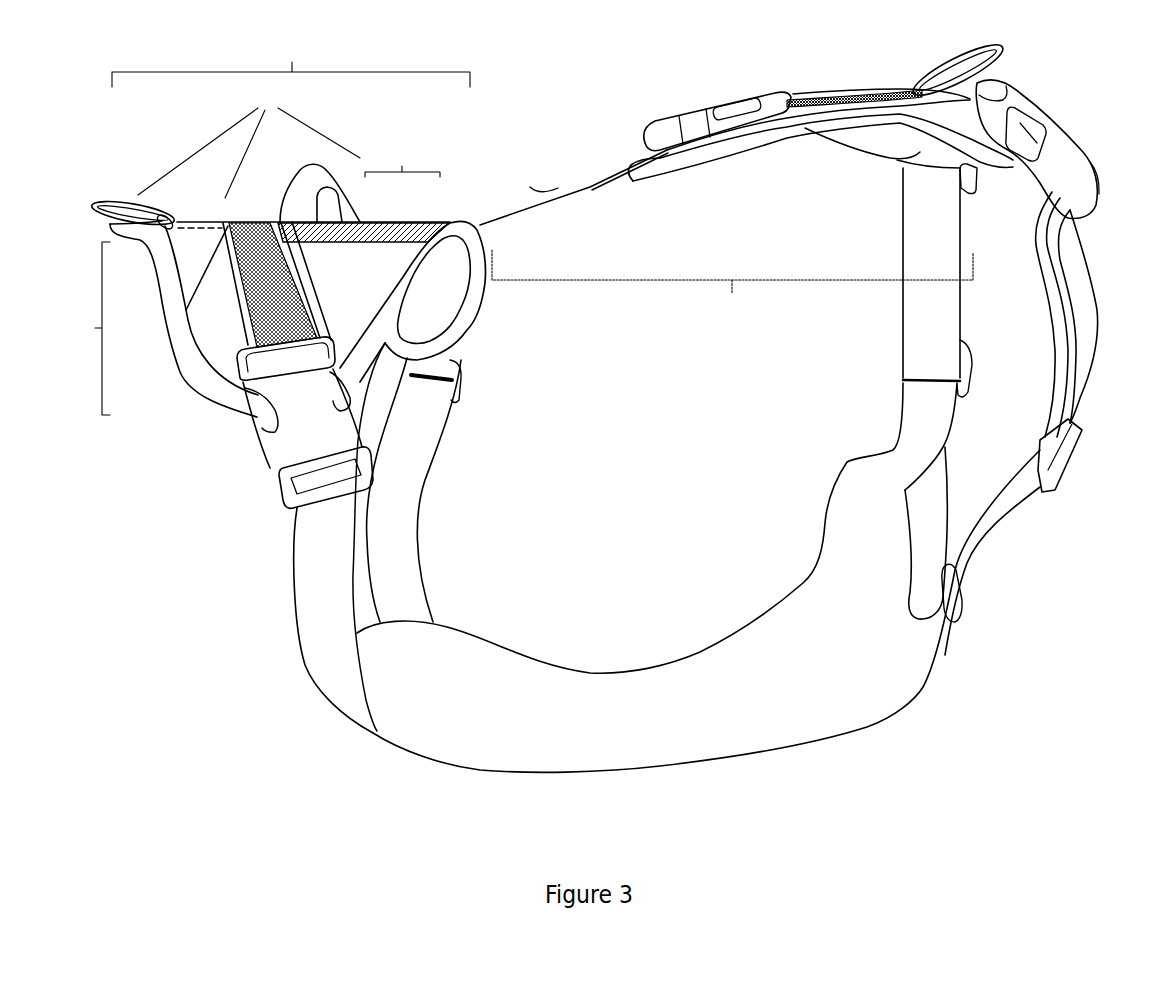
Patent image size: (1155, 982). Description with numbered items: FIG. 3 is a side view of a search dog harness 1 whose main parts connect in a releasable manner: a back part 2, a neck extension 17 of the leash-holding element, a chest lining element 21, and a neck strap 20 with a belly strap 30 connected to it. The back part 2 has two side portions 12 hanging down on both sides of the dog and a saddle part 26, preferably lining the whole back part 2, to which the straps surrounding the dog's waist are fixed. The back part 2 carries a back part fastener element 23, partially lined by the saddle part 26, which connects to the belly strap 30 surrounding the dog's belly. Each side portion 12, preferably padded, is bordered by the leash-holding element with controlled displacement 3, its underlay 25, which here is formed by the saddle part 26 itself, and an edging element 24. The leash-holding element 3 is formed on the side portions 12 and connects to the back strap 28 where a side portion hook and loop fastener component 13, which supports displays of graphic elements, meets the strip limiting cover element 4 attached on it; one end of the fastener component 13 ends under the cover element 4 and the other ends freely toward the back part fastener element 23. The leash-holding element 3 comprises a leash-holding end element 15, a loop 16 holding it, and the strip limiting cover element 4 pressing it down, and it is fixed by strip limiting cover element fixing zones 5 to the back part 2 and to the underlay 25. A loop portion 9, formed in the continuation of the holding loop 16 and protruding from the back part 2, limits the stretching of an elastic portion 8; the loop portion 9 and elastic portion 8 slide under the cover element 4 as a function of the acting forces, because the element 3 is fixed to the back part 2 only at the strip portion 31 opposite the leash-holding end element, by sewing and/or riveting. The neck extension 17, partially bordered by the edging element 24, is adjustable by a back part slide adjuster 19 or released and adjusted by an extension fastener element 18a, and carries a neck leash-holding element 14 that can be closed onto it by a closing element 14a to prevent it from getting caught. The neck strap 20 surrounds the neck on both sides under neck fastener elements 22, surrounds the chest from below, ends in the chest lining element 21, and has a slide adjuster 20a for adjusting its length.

The search dog harness 1 is at (625, 102).
The back part 2 is at (291, 63).
The leash-holding element with controlled displacement 3 is at (249, 146).
The strip limiting cover element 4 is at (188, 262).
The strip limiting cover element fixing zones 5 is at (142, 237).
The elastic portion 8 is at (343, 243).
The loop portion 9 is at (348, 206).
The side portion 12 is at (93, 328).
The side portion hook and loop fastener component 13 is at (253, 307).
The neck leash-holding element 14 is at (993, 50).
The closing element 14a is at (890, 95).
The leash-holding end element 15 is at (100, 203).
The loop holding the leash-holding end element 16 is at (170, 230).
The neck extension of the leash-holding element 17 is at (732, 281).
The extension fastener element 18a is at (727, 113).
The back part slide adjuster 19 is at (613, 160).
The neck strap 20 is at (927, 83).
The slide adjuster 20a is at (970, 357).
The chest lining element 21 is at (907, 650).
The neck fastener elements 22 is at (1060, 133).
The back part fastener element 23 is at (277, 453).
The edging element 24 is at (812, 128).
The underlay 25 is at (420, 223).
The saddle part 26 is at (455, 285).
The back strap 28 is at (307, 290).
The belly strap 30 is at (413, 467).
The strip portion opposite to the leash-holding end element 31 is at (402, 163).